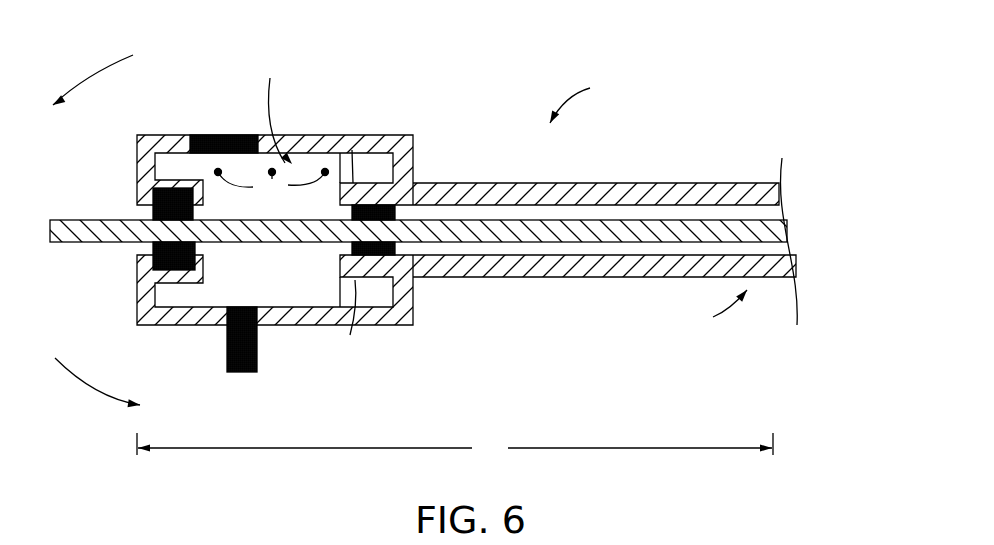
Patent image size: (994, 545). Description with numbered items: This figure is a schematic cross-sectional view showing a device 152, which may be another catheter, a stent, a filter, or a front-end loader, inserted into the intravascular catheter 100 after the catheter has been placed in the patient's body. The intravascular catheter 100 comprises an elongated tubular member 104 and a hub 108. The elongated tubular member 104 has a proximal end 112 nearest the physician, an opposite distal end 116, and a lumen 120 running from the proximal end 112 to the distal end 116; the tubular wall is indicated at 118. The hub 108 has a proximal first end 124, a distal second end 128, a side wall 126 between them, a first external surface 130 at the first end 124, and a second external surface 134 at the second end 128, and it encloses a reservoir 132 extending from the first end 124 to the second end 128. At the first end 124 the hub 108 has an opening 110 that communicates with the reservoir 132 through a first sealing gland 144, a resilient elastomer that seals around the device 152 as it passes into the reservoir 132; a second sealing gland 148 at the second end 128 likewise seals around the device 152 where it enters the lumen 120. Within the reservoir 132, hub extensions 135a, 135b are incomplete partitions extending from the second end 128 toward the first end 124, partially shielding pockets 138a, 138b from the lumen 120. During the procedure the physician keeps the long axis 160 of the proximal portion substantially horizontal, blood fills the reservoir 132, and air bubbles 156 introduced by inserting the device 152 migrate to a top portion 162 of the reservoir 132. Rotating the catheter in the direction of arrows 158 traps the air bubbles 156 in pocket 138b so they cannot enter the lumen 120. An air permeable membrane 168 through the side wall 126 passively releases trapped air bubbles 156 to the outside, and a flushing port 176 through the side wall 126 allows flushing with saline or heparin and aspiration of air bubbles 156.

The intravascular catheter 100 is at (419, 251).
The elongated tubular member 104 is at (597, 184).
The hub 108 is at (400, 135).
The opening 110 is at (145, 248).
The proximal end 112 is at (417, 280).
The distal end 116 is at (712, 312).
The tube wall surface 118 is at (718, 184).
The lumen 120 is at (573, 250).
The first end 124 is at (137, 322).
The side wall 126 is at (320, 135).
The second end 128 is at (412, 325).
The first external surface 130 is at (137, 150).
The reservoir 132 is at (315, 285).
The second external surface 134 is at (365, 166).
The hub extension 135a is at (348, 323).
The hub extension 135b is at (352, 150).
The pocket 138a is at (362, 290).
The pocket 138b is at (400, 150).
The first sealing gland 144 is at (195, 248).
The second sealing gland 148 is at (350, 247).
The device 152 is at (93, 220).
The air bubbles 156 is at (272, 191).
The arrows 158 is at (103, 68).
The long axis 160 is at (455, 448).
The top portion 162 is at (272, 108).
The air permeable membrane 168 is at (227, 135).
The flushing port 176 is at (228, 342).